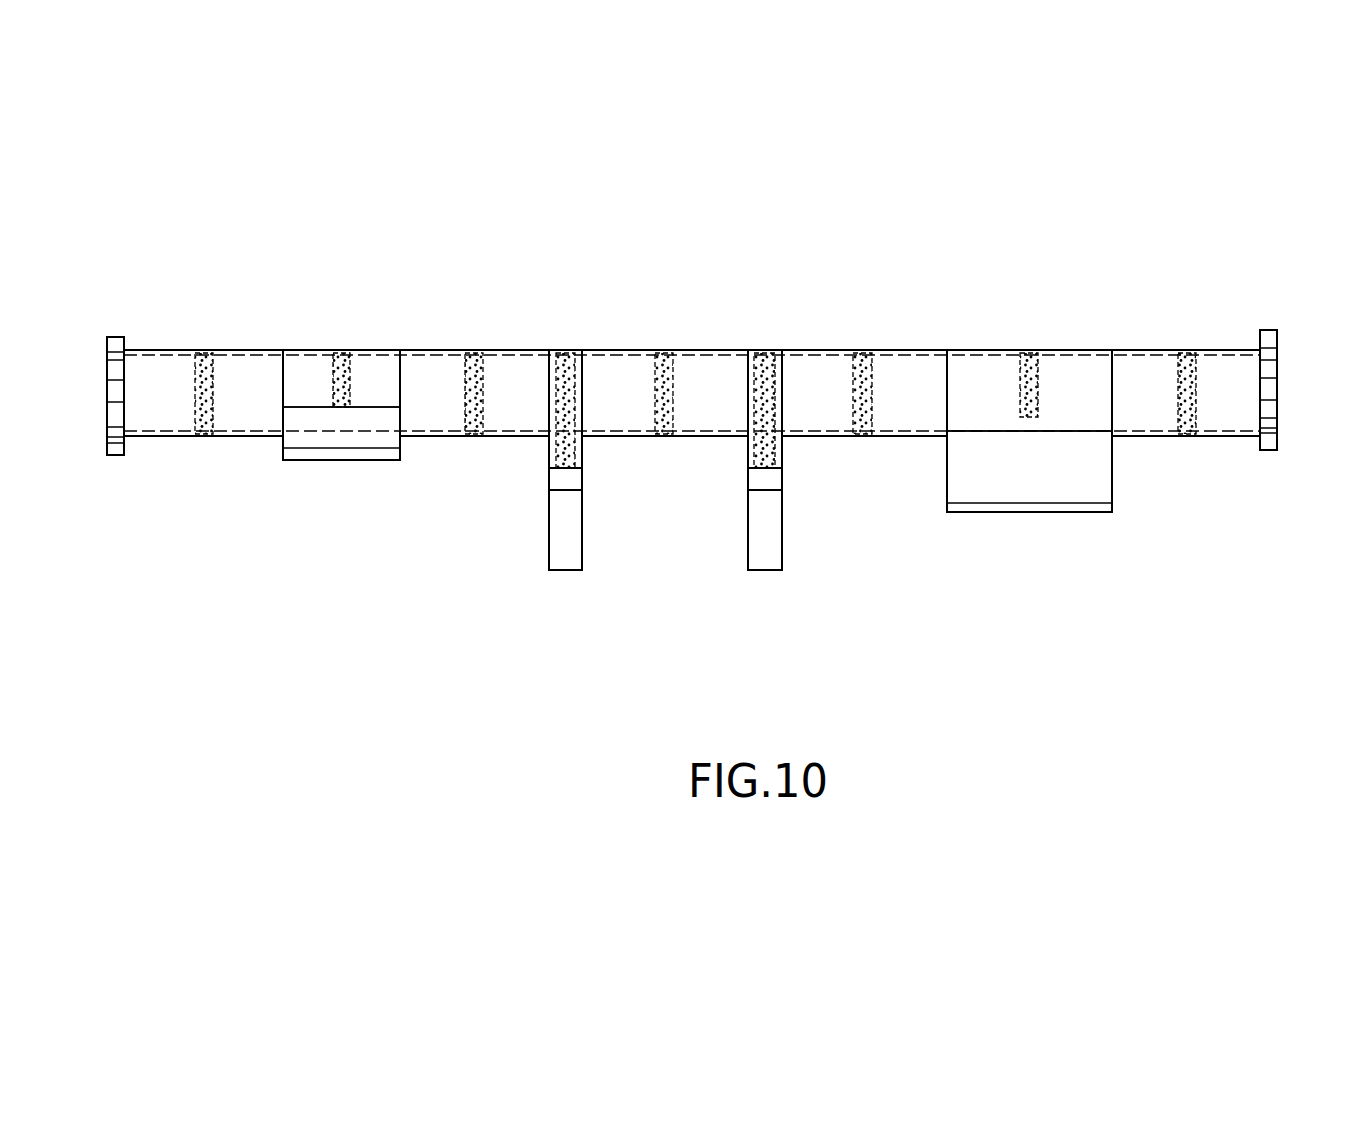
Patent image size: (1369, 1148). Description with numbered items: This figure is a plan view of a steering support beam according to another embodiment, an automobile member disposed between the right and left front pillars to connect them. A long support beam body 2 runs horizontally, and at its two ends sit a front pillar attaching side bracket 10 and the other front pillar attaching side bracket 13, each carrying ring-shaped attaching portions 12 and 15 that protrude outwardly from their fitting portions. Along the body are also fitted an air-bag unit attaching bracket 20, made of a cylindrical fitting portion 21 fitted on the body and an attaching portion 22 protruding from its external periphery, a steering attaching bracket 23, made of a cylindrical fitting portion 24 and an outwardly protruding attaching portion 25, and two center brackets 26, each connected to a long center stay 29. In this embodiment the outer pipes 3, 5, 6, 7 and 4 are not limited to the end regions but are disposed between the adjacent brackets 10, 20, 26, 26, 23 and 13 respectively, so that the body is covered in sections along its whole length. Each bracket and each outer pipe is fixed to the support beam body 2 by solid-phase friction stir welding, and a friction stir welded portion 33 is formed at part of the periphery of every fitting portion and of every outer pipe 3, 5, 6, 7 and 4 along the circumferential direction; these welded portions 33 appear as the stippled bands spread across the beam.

The support beam body 2 is at (168, 353).
The outer pipe 3 is at (247, 373).
The outer pipe 4 is at (1150, 377).
The outer pipe 5 is at (520, 373).
The outer pipe 6 is at (615, 373).
The outer pipe 7 is at (818, 373).
The front pillar attaching side bracket 10 is at (115, 394).
The ring-shaped attaching portion 12 is at (117, 375).
The front pillar attaching side bracket 13 is at (1268, 388).
The ring-shaped attaching portion 15 is at (1268, 370).
The air-bag unit attaching bracket 20 is at (368, 387).
The cylindrical fitting portion 21 is at (305, 373).
The attaching portion 22 is at (325, 457).
The steering attaching bracket 23 is at (1077, 378).
The cylindrical fitting portion 24 is at (975, 370).
The attaching portion 25 is at (1032, 482).
The center bracket 26 is at (555, 478).
The center stay 29 is at (568, 555).
The friction stir welded portion 33 is at (340, 358).